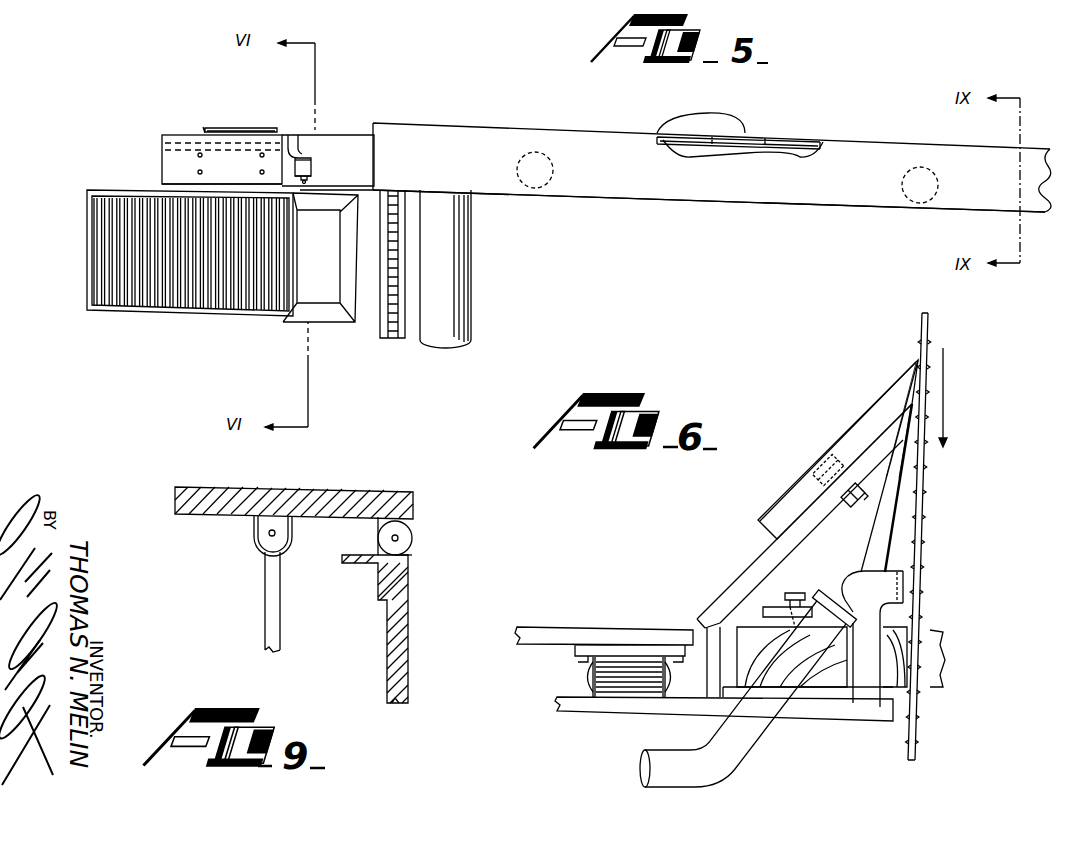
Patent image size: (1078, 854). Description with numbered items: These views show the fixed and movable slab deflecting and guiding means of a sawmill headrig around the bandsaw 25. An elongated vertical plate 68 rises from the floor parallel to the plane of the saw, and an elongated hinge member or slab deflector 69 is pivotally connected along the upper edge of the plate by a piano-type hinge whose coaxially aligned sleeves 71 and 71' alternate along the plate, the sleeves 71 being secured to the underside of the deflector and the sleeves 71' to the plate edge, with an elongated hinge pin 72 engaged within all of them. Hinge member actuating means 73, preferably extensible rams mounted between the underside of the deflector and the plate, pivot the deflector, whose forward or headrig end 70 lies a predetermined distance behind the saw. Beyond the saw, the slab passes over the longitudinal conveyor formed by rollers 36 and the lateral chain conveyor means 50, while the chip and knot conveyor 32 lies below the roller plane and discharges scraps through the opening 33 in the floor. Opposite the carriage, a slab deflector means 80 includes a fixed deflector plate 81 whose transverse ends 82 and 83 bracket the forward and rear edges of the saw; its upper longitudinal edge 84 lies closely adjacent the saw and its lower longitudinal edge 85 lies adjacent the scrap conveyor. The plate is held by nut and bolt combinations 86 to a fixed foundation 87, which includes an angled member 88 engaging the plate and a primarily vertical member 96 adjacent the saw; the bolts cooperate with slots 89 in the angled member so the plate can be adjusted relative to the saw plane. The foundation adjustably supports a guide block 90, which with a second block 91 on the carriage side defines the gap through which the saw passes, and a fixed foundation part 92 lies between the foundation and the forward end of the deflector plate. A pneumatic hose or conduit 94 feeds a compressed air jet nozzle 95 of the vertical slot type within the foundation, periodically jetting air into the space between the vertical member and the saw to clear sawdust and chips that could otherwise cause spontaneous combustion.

In FIG. 5, the headrig bandsaw 25 is at (212, 127).
In FIG. 6, the headrig bandsaw 25 is at (930, 330).
In FIG. 5, the chip and knot conveyor 32 is at (205, 277).
In FIG. 6, the chip and knot conveyor 32 is at (562, 630).
In FIG. 5, the opening 33 is at (325, 267).
In FIG. 5, the rollers 36 is at (455, 288).
In FIG. 5, the chain conveyor means 50 is at (377, 313).
In FIG. 9, the vertical plate 68 is at (410, 640).
In FIG. 5, the hinge member or slab deflector 69 is at (732, 178).
In FIG. 9, the hinge member or slab deflector 69 is at (312, 500).
In FIG. 5, the forward or headrig end 70 is at (455, 146).
In FIG. 5, the hinge / sleeves 71 is at (740, 122).
In FIG. 9, the hinge / sleeves 71 is at (423, 526).
In FIG. 5, the sleeves 71' is at (739, 163).
In FIG. 9, the sleeves 71' is at (438, 556).
In FIG. 9, the hinge pin 72 is at (385, 537).
In FIG. 5, the hinge member actuating means 73 is at (538, 188).
In FIG. 9, the hinge member actuating means 73 is at (262, 602).
In FIG. 5, the slab deflector means 80 is at (222, 126).
In FIG. 6, the slab deflector means 80 is at (837, 437).
In FIG. 5, the fixed deflector plate 81 is at (218, 172).
In FIG. 6, the fixed deflector plate 81 is at (877, 415).
In FIG. 5, the transverse end 82 is at (162, 150).
In FIG. 5, the transverse end 83 is at (292, 135).
In FIG. 6, the upper longitudinal edge 84 is at (917, 360).
In FIG. 6, the lower longitudinal edge 85 is at (757, 530).
In FIG. 6, the nut and bolt combinations 86 is at (815, 462).
In FIG. 6, the fixed foundation 87 is at (875, 533).
In FIG. 6, the angled member 88 is at (775, 548).
In FIG. 6, the slots 89 is at (845, 492).
In FIG. 6, the guide block 90 is at (837, 673).
In FIG. 6, the second block 91 is at (933, 687).
In FIG. 5, the fixed foundation part 92 is at (350, 173).
In FIG. 5, the pneumatic hose or conduit 94 is at (307, 176).
In FIG. 6, the pneumatic hose or conduit 94 is at (727, 757).
In FIG. 5, the compressed air jet nozzle 95 is at (312, 163).
In FIG. 6, the compressed air jet nozzle 95 is at (888, 587).
In FIG. 5, the vertical member 96 is at (247, 143).
In FIG. 6, the vertical member 96 is at (880, 478).